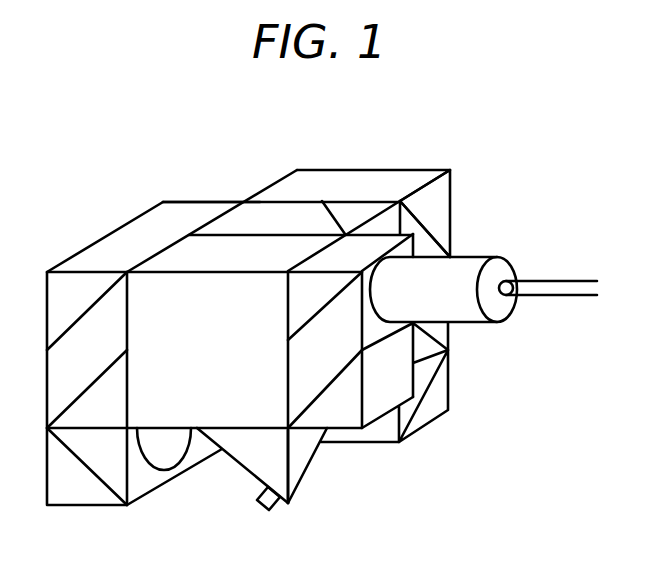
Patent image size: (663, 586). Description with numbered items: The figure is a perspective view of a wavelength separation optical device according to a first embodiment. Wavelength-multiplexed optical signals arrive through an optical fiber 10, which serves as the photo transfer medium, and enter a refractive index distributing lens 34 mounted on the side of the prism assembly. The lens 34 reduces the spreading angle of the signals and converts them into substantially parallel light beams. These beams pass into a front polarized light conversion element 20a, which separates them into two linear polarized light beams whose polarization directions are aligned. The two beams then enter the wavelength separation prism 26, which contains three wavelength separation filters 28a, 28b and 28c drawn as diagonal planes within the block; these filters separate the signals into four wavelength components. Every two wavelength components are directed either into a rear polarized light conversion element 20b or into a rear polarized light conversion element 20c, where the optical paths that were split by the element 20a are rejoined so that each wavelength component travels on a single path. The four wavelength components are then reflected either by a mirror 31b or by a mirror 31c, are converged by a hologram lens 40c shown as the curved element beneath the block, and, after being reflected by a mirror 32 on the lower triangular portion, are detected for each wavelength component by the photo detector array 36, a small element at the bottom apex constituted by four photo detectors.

The optical fiber 10 is at (548, 290).
The polarized light conversion element 20a is at (343, 428).
The polarized light conversion element 20b is at (352, 168).
The polarized light conversion element 20c is at (85, 249).
The wavelength separation prism 26 is at (213, 415).
The wavelength separation filter 28a is at (288, 268).
The wavelength separation filter 28b is at (346, 205).
The wavelength separation filter 28c is at (222, 201).
The mirror 31b is at (443, 403).
The mirror 31c is at (60, 485).
The mirror 32 is at (291, 468).
The refractive index distributing lens 34 is at (478, 257).
The photo detector array 36 is at (265, 513).
The hologram lens 40c is at (160, 465).